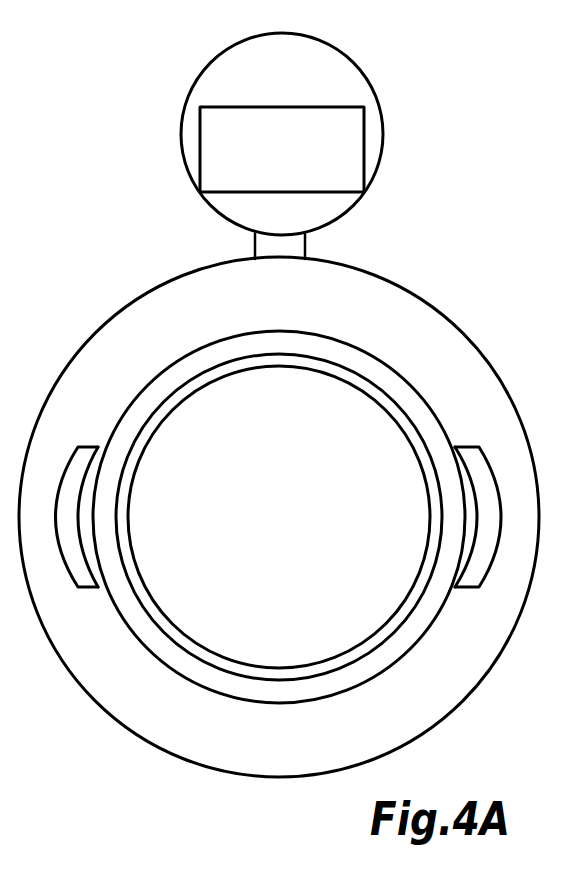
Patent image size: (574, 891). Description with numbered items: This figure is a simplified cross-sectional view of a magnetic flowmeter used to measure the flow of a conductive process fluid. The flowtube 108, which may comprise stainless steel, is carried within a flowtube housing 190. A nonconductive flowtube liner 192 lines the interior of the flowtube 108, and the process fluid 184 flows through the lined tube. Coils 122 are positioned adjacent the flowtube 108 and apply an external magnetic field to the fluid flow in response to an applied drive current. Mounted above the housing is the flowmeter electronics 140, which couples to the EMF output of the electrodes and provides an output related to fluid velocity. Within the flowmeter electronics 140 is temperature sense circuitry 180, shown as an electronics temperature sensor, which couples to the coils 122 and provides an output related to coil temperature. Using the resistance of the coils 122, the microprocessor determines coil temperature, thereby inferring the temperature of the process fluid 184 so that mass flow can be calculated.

The flowmeter electronics 140 is at (357, 65).
The temperature sense circuitry 180 is at (365, 138).
The process fluid 184 is at (298, 418).
The coils 122 is at (499, 517).
The nonconductive flowtube liner 192 is at (276, 666).
The flowtube 108 is at (427, 633).
The flowtube housing 190 is at (417, 737).